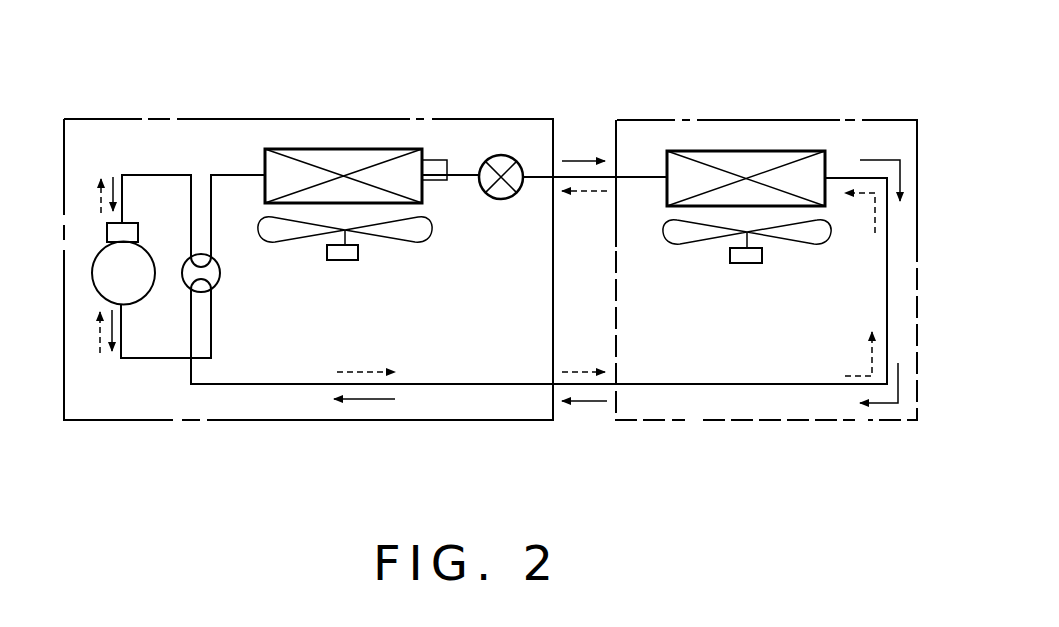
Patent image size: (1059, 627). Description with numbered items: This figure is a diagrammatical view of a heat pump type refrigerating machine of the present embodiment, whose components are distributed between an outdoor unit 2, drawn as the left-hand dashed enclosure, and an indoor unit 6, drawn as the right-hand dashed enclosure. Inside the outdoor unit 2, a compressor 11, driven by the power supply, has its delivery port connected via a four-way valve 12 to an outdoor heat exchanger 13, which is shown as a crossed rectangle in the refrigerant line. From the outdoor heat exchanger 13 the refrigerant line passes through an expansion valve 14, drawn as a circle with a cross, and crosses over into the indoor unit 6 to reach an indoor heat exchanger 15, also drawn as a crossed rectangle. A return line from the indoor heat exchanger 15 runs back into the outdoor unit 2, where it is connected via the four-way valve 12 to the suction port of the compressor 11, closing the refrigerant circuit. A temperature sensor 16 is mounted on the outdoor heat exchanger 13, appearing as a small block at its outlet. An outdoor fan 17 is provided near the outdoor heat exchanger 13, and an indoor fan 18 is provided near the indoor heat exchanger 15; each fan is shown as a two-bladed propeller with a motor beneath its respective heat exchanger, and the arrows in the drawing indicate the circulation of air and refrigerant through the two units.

The outdoor unit 2 is at (270, 119).
The indoor unit 6 is at (732, 120).
The compressor 11 is at (93, 266).
The four-way valve 12 is at (220, 272).
The outdoor heat exchanger 13 is at (338, 149).
The expansion valve 14 is at (501, 199).
The indoor heat exchanger 15 is at (753, 152).
The temperature sensor 16 is at (437, 160).
The outdoor fan 17 is at (390, 242).
The indoor fan 18 is at (802, 243).